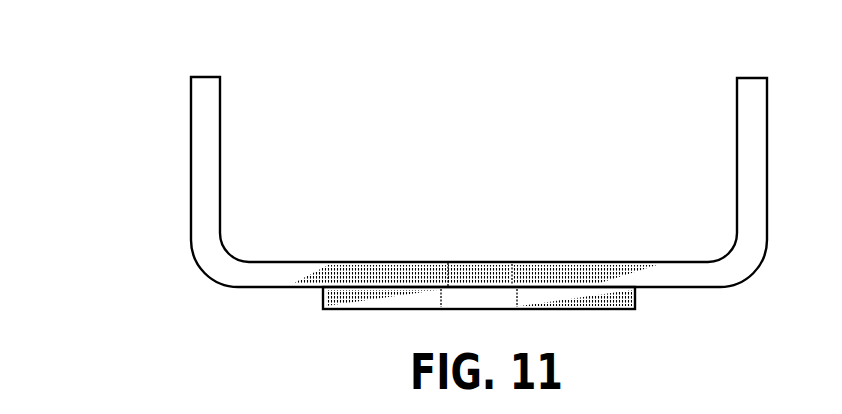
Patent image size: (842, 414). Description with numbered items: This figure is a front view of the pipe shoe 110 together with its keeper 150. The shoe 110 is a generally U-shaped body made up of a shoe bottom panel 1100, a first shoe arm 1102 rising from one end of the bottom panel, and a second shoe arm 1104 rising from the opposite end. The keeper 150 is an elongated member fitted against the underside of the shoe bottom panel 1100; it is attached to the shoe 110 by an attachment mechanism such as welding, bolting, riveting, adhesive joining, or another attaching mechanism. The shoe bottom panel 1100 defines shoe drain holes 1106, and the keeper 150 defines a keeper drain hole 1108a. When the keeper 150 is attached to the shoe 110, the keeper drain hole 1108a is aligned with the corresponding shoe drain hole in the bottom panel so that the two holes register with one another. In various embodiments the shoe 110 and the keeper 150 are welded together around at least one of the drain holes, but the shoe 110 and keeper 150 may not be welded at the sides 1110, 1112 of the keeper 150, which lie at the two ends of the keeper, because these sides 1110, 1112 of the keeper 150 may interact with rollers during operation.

The shoe 110 is at (205, 247).
The first shoe arm 1102 is at (208, 131).
The second shoe arm 1104 is at (744, 108).
The shoe bottom panel 1100 is at (360, 268).
The shoe drain holes 1106 is at (512, 278).
The side of the keeper 1110 is at (323, 297).
The keeper drain hole 1108a is at (518, 298).
The keeper 150 is at (632, 304).
The side of the keeper 1112 is at (635, 295).